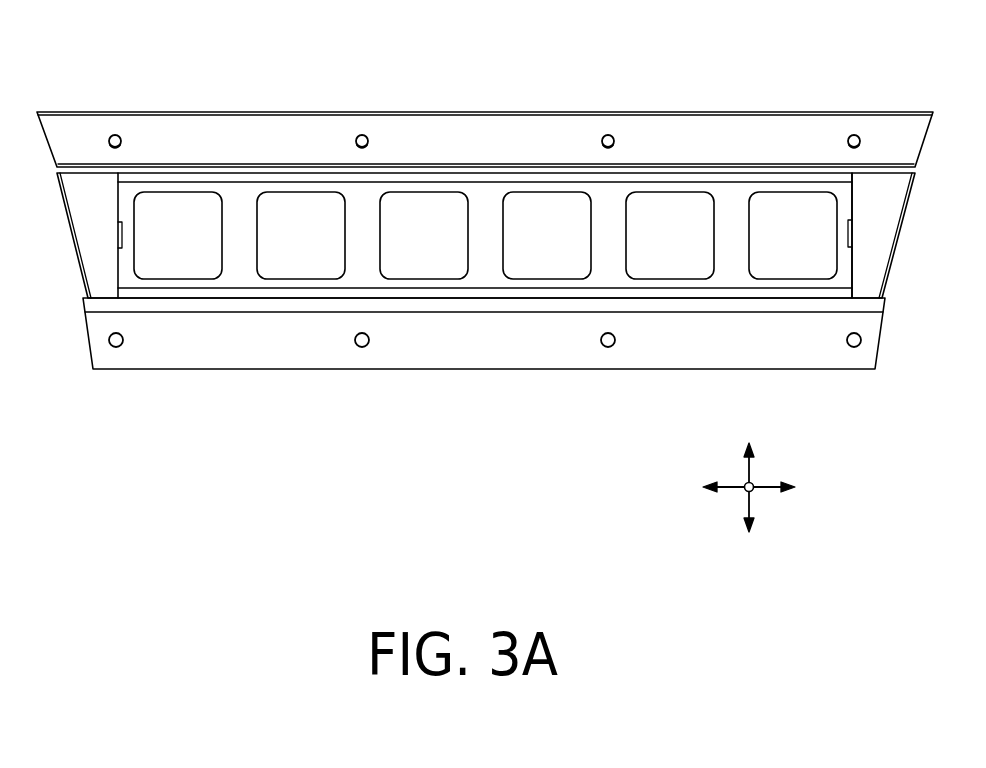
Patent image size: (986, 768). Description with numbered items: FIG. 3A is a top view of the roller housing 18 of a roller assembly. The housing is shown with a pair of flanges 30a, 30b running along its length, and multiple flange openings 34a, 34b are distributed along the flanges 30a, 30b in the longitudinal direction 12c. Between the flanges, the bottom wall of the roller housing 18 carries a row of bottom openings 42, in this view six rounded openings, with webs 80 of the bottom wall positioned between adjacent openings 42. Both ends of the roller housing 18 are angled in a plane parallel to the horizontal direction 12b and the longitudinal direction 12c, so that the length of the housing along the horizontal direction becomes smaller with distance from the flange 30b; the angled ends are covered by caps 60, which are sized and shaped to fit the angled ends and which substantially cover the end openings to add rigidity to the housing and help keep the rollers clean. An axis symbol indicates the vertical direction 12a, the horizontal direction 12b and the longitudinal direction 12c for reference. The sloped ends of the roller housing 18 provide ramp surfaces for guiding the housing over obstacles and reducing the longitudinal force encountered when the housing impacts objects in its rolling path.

The roller housing 18 is at (519, 76).
The flange 30a is at (806, 350).
The flange 30b is at (896, 128).
The flange openings 34a is at (116, 347).
The flange openings 34b is at (120, 136).
The bottom openings 42 is at (135, 218).
The cap 60 is at (97, 245).
The web 80 is at (602, 262).
The vertical direction 12a is at (753, 491).
The horizontal direction 12b is at (745, 482).
The longitudinal direction 12c is at (753, 487).